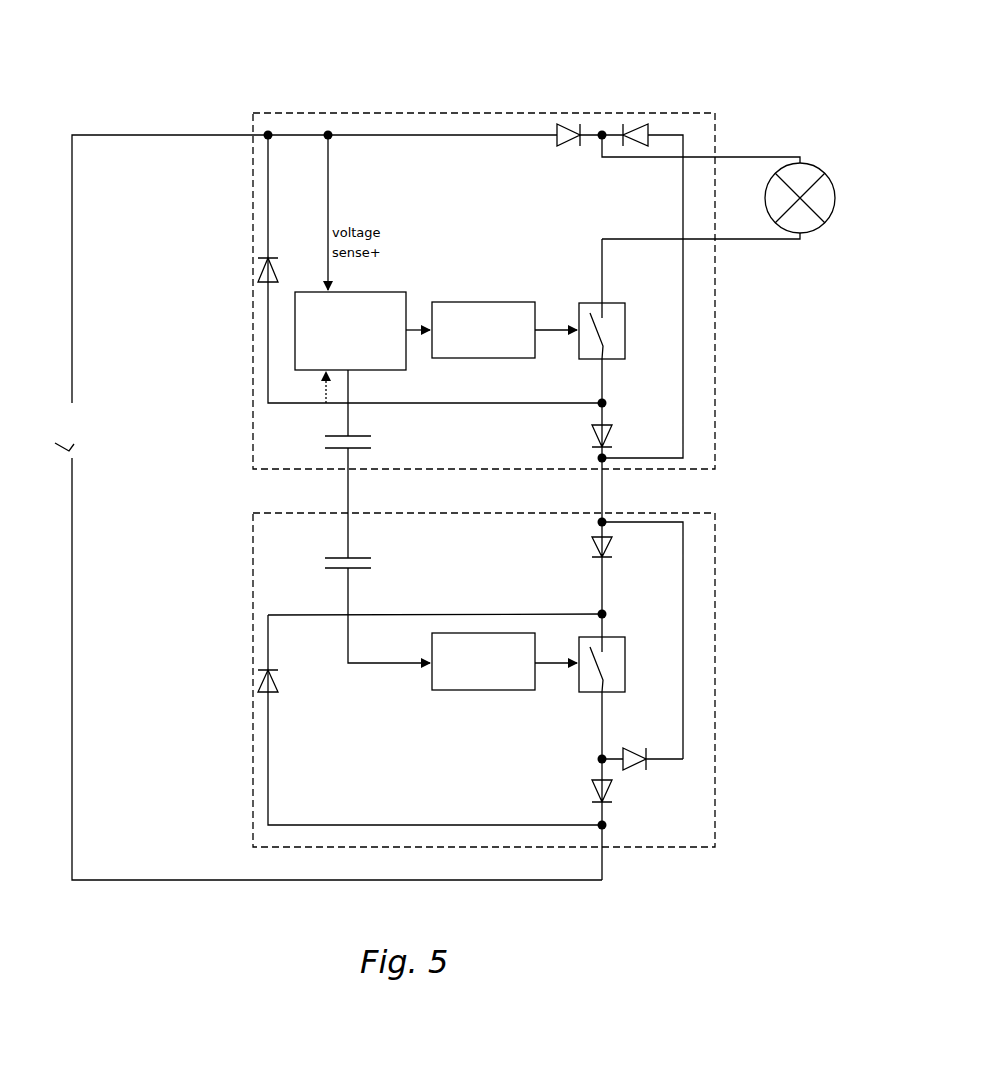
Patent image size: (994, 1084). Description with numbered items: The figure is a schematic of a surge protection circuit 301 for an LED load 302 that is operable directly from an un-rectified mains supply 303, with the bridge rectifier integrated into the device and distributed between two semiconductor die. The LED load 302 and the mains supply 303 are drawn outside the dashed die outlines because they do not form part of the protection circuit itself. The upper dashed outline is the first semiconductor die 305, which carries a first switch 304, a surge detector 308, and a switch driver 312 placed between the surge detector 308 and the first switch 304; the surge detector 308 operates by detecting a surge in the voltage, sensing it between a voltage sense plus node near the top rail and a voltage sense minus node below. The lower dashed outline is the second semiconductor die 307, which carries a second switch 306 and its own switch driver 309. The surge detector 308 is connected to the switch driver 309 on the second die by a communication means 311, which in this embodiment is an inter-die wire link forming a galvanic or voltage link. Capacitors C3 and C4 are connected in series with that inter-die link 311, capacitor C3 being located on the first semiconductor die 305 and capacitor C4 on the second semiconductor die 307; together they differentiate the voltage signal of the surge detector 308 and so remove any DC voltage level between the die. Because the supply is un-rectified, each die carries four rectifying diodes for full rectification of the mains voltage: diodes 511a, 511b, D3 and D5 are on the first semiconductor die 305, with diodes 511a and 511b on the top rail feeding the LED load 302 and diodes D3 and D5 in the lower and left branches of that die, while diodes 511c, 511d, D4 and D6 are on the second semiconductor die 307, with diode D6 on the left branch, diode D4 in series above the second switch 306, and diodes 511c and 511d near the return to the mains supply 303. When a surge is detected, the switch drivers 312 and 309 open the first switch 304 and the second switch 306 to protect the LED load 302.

The surge protection circuit 301 is at (203, 83).
The LED load 302 is at (822, 226).
The mains supply 303 is at (321, 507).
The first switch 304 is at (626, 332).
The first semiconductor die 305 is at (703, 447).
The second switch 306 is at (626, 667).
The second semiconductor die 307 is at (692, 810).
The surge detector 308 is at (323, 367).
The switch driver 309 is at (488, 633).
The communication means 311 is at (349, 492).
The switch driver 312 is at (488, 358).
The diode 511a is at (571, 127).
The diode 511b is at (641, 127).
The diode 511c is at (614, 803).
The diode 511d is at (638, 772).
The diode D3 is at (637, 380).
The diode D4 is at (637, 640).
The diode D5 is at (411, 269).
The diode D6 is at (401, 719).
The capacitor C3 is at (364, 445).
The capacitor C4 is at (364, 567).